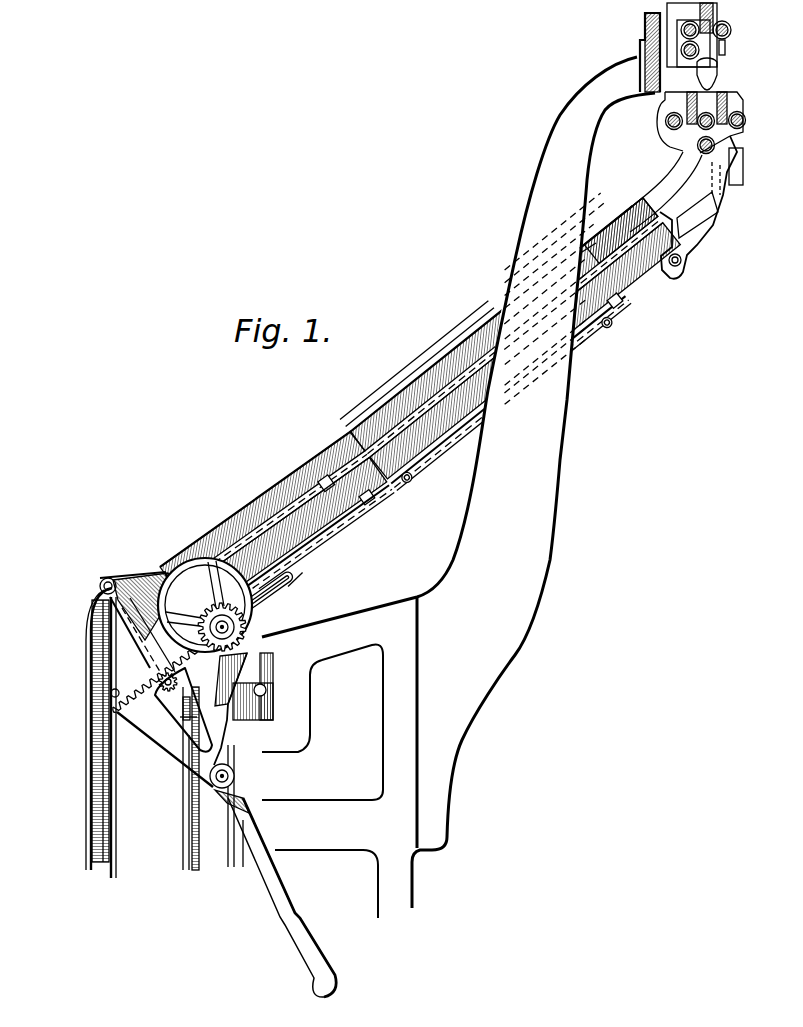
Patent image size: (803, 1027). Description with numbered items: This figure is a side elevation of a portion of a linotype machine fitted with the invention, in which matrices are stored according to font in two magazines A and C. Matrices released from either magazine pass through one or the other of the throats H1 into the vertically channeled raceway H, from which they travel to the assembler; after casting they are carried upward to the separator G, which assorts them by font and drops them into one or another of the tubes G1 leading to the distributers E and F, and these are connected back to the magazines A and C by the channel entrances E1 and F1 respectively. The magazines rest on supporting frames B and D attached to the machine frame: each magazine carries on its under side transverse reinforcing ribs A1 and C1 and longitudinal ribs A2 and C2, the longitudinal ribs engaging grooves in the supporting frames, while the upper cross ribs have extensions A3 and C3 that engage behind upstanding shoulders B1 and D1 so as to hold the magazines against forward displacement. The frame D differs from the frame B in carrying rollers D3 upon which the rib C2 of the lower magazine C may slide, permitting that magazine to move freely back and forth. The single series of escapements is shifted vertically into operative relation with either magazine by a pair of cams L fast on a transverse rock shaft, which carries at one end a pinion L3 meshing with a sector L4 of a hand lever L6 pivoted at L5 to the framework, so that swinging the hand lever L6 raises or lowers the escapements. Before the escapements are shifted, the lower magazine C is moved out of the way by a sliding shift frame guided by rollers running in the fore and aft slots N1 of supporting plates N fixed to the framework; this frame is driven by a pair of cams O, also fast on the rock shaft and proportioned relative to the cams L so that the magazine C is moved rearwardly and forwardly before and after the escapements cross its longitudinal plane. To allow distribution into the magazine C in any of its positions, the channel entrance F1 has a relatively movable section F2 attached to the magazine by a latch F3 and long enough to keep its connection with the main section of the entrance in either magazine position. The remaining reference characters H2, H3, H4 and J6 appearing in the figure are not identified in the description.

The magazine A is at (340, 425).
The transverse reinforcing rib A1 is at (312, 480).
The longitudinal rib A2 is at (272, 520).
The extension A3 is at (620, 243).
The supporting frame B is at (440, 393).
The upstanding shoulder B1 is at (582, 250).
The magazine C is at (372, 467).
The transverse reinforcing rib C1 is at (336, 495).
The longitudinal rib C2 is at (315, 533).
The extension C3 is at (642, 277).
The supporting frame D is at (585, 337).
The upstanding shoulder D1 is at (628, 297).
The rollers D3 is at (412, 478).
The distributer E is at (666, 125).
The channel entrance E1 is at (676, 182).
The distributer F is at (730, 102).
The channel entrance F1 is at (728, 176).
The movable section F2 is at (700, 218).
The latch F3 is at (684, 273).
The separator G is at (708, 32).
The tubes G1 is at (712, 72).
The raceway H is at (95, 788).
The throats H1 is at (113, 663).
The web H2 is at (100, 630).
The toothed sector H3 is at (128, 673).
The pivot H4 is at (102, 586).
The post J6 is at (185, 812).
The cams L is at (165, 578).
The pinion L3 is at (236, 630).
The sector L4 is at (220, 723).
The pivot L5 is at (234, 776).
The hand lever L6 is at (271, 887).
The supporting plates N is at (286, 583).
The fore and aft slots N1 is at (278, 594).
The cams O is at (216, 570).